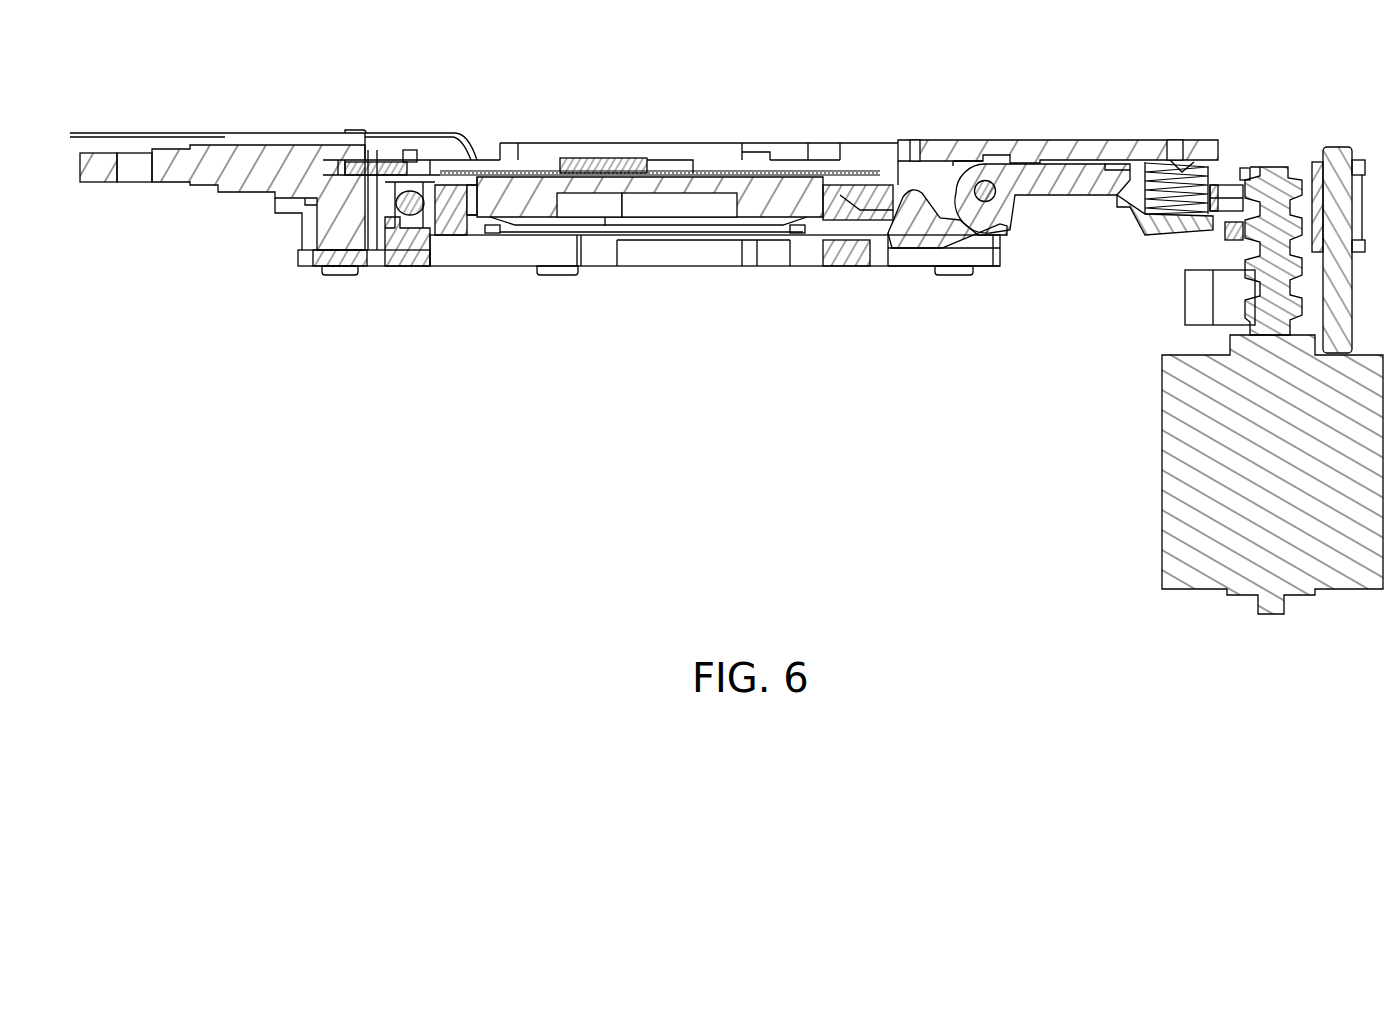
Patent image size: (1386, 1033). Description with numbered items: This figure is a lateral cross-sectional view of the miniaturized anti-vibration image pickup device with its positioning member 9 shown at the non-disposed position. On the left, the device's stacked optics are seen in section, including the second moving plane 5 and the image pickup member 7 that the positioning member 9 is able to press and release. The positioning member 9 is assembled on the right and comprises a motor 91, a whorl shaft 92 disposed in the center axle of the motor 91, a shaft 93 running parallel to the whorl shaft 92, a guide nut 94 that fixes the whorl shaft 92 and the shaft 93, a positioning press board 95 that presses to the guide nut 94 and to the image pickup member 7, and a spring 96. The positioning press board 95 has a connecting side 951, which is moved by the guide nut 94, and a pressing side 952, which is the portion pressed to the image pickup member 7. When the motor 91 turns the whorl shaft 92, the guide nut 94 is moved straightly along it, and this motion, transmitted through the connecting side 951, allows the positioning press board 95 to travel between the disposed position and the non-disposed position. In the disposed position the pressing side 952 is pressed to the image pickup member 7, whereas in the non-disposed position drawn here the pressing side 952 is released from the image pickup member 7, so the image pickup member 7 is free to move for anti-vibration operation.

The second moving plane 5 is at (858, 185).
The image pickup member 7 is at (661, 175).
The positioning member 9 is at (1158, 492).
The motor 91 is at (1172, 564).
The whorl shaft 92 is at (1270, 185).
The shaft 93 is at (1333, 150).
The guide nut 94 is at (1227, 240).
The positioning press board 95 is at (1046, 188).
The connecting side 951 is at (1228, 216).
The pressing side 952 is at (912, 208).
The spring 96 is at (1130, 168).